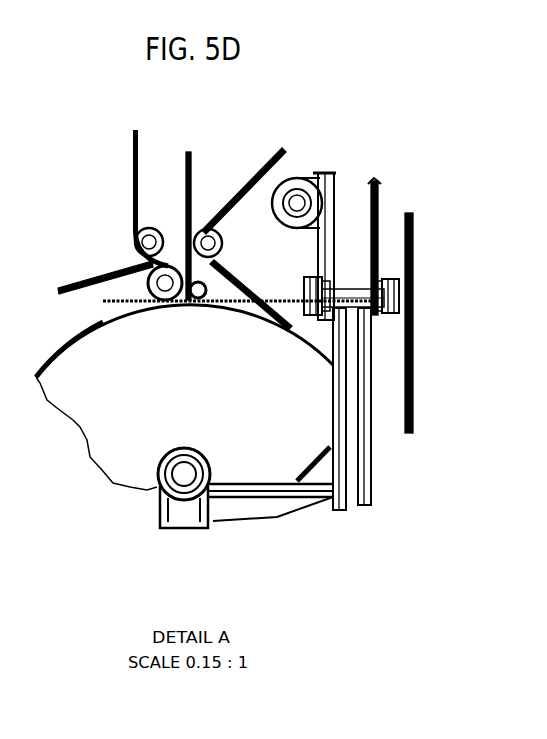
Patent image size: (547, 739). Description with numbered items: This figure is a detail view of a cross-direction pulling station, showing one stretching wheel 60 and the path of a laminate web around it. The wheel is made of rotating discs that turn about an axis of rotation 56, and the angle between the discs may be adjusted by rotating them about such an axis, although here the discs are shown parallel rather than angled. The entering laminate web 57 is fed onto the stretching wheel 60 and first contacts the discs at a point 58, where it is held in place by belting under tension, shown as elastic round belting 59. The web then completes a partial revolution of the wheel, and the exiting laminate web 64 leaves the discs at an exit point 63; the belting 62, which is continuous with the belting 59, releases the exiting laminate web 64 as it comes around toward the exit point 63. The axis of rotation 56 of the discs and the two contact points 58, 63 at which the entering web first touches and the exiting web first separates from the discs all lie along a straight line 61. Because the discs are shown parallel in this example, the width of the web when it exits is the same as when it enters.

The axis of rotation 56 is at (352, 302).
The entering laminate web 57 is at (133, 150).
The entry contact point 58 is at (150, 293).
The elastic round belting 59 is at (62, 289).
The stretching wheel 60 is at (243, 402).
The straight line 61 is at (296, 299).
The belting 62 is at (258, 294).
The exit point 63 is at (218, 286).
The exiting laminate web 64 is at (262, 191).